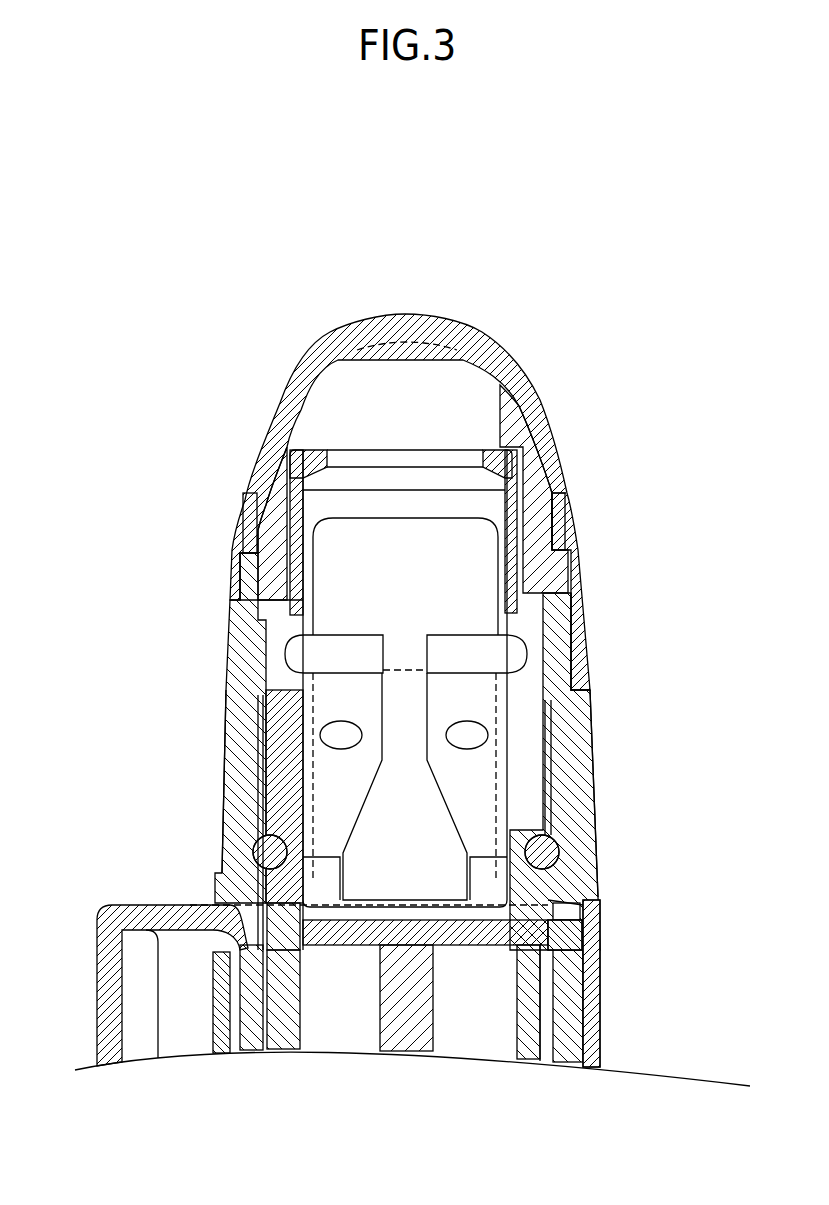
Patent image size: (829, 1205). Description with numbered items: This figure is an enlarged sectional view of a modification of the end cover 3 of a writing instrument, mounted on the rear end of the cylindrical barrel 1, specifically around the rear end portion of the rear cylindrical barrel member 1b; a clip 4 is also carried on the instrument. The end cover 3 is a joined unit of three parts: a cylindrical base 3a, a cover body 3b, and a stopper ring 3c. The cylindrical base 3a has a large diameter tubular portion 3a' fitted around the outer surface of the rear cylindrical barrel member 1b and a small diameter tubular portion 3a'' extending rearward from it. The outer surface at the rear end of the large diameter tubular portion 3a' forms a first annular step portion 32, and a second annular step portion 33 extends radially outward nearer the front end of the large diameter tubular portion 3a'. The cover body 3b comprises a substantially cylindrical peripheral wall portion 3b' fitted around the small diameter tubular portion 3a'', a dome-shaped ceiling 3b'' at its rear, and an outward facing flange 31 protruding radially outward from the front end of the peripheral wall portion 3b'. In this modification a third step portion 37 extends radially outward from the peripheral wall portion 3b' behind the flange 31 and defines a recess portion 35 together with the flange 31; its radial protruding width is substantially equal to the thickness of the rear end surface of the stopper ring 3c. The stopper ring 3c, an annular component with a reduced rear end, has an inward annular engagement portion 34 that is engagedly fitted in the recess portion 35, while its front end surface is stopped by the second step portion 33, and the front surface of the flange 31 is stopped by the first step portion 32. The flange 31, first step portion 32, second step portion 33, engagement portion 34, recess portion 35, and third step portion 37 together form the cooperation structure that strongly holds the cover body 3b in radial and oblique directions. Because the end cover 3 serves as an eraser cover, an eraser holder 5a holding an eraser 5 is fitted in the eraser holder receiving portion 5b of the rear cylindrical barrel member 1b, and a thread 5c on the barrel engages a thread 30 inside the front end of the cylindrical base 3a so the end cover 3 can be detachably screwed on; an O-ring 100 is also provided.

The cylindrical barrel 1 is at (612, 978).
The rear cylindrical barrel member 1b is at (212, 985).
The end cover 3 is at (400, 296).
The cylindrical base 3a is at (411, 667).
The large diameter tubular portion 3a' is at (411, 789).
The small diameter tubular portion 3a'' is at (235, 532).
The cover body 3b is at (438, 474).
The peripheral wall portion 3b' is at (591, 427).
The top surface of dome cover 3b'' is at (423, 304).
The stopper ring 3c is at (232, 540).
The clip 4 is at (98, 985).
The eraser 5 is at (377, 520).
The eraser holder 5a is at (292, 652).
The eraser holder receiving portion 5b is at (250, 770).
The thread 5c is at (581, 737).
The thread 30 is at (265, 805).
The outward facing flange 31 is at (550, 575).
The first annular step portion 32 is at (260, 583).
The second annular step portion 33 is at (590, 670).
The annular engagement portion 34 is at (267, 490).
The recess portion 35 is at (570, 505).
The third step portion 37 is at (567, 497).
The O-ring 100 is at (597, 862).